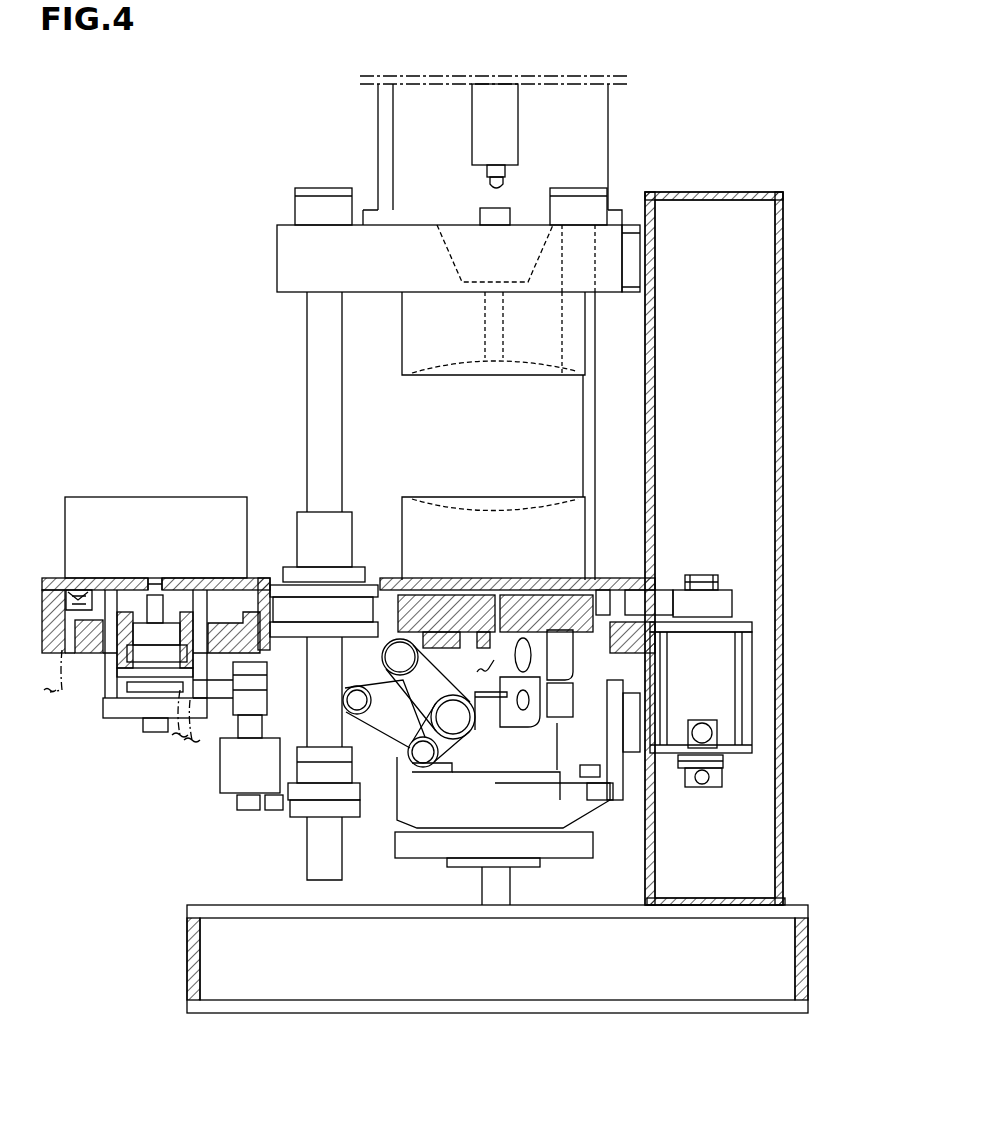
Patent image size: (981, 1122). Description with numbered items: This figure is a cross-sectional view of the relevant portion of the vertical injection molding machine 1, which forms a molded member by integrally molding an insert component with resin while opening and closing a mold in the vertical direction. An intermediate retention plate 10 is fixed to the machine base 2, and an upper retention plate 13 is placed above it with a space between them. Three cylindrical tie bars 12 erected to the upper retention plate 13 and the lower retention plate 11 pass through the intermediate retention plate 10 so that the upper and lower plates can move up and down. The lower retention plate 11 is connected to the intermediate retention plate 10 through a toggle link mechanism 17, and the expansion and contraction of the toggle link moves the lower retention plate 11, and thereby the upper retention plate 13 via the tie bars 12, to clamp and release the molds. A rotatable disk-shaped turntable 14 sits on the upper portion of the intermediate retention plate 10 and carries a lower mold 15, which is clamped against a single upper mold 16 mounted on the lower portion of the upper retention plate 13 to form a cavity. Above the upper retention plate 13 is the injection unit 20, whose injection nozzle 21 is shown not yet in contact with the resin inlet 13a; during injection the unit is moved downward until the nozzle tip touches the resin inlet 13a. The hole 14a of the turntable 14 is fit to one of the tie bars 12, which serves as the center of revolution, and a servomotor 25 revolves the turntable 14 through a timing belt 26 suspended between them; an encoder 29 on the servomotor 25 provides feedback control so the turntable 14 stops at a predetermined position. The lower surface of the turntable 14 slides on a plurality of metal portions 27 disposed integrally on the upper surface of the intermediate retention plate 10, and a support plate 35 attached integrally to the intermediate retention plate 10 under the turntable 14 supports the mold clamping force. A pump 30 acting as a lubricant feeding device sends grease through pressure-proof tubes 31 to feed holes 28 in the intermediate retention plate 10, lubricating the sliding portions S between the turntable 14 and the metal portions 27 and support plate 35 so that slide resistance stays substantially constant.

The vertical injection molding machine 1 is at (699, 90).
The machine base 2 is at (760, 960).
The intermediate retention plate 10 is at (45, 597).
The lower retention plate 11 is at (460, 805).
The tie bar 12 is at (330, 425).
The upper retention plate 13 is at (300, 247).
The resin inlet 13a is at (493, 282).
The turntable 14 is at (228, 583).
The hole 14a is at (277, 578).
The lower mold 15 is at (190, 505).
The upper mold 16 is at (423, 321).
The toggle link mechanism 17 is at (404, 738).
The injection unit 20 is at (622, 116).
The injection nozzle 21 is at (490, 177).
The servomotor 25 is at (705, 668).
The timing belt 26 is at (655, 602).
The metal portion 27 is at (77, 580).
The feed hole 28 is at (87, 580).
The encoder 29 is at (687, 777).
The pump 30 is at (235, 763).
The pressure-proof tube 31 is at (64, 680).
The support plate 35 is at (517, 638).
The sliding portion S is at (82, 580).